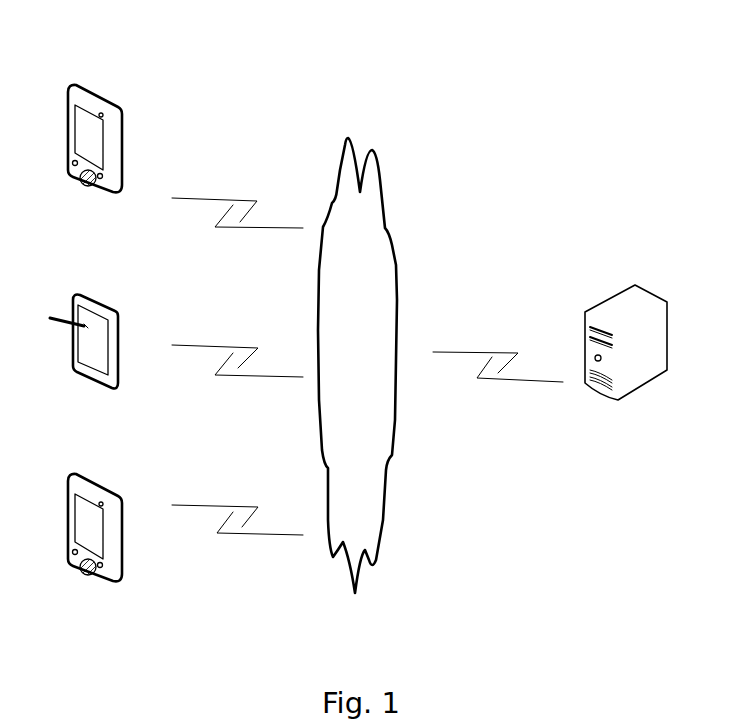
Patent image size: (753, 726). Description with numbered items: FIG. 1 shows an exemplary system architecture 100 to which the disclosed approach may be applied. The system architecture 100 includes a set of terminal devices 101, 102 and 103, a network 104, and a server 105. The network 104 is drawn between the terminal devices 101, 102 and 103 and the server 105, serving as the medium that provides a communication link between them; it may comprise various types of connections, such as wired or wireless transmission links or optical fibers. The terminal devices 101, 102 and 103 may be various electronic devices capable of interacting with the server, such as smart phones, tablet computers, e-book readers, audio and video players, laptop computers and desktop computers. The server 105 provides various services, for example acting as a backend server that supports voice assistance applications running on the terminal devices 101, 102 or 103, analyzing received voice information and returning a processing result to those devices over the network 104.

The system architecture 100 is at (583, 57).
The terminal device 101 is at (95, 546).
The terminal device 102 is at (84, 359).
The terminal device 103 is at (95, 157).
The network 104 is at (357, 365).
The server 105 is at (626, 363).